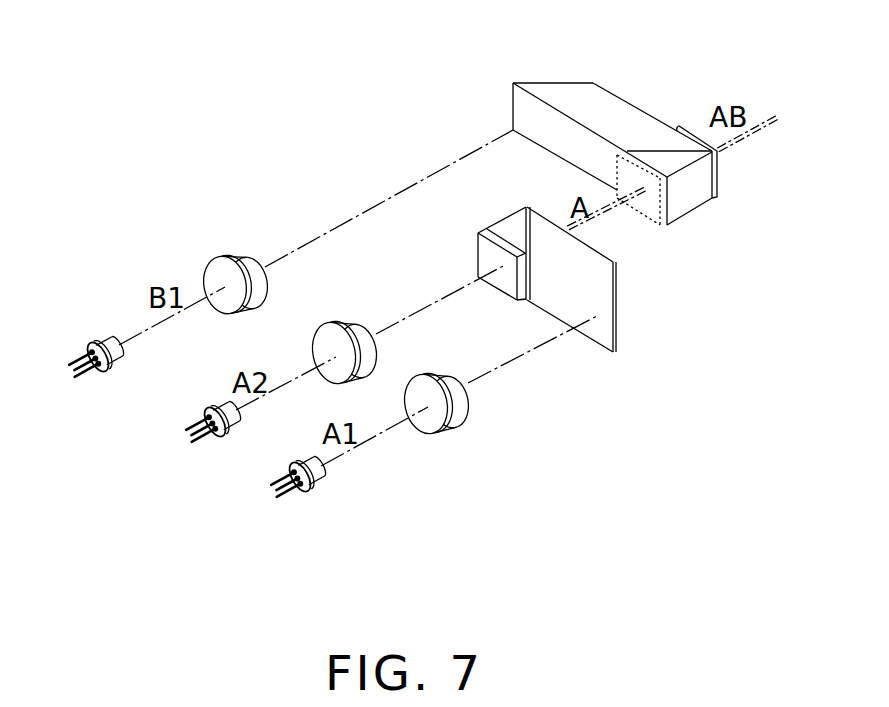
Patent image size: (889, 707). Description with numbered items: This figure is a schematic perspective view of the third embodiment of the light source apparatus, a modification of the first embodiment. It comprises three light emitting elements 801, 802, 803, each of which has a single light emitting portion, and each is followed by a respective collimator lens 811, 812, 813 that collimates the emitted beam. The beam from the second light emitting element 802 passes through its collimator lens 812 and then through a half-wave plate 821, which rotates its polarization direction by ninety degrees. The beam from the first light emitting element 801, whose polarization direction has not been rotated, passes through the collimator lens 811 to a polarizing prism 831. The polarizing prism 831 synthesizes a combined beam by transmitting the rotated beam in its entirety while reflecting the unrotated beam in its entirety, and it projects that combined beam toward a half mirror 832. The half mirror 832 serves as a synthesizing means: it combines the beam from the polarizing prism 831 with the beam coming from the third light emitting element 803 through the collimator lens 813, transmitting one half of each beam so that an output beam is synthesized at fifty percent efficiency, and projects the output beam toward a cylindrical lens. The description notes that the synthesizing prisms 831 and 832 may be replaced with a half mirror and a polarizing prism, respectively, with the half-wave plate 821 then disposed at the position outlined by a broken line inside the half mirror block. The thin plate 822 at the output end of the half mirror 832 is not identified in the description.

The light emitting element 801 is at (303, 493).
The light emitting element 802 is at (212, 438).
The light emitting element 803 is at (98, 373).
The collimator lens 811 is at (430, 422).
The collimator lens 812 is at (350, 330).
The collimator lens 813 is at (240, 262).
The half-wave plate 821 is at (503, 287).
The beam combining element (half mirror plate) 822 is at (718, 192).
The polarizing prism 831 is at (603, 282).
The half mirror 832 is at (601, 108).